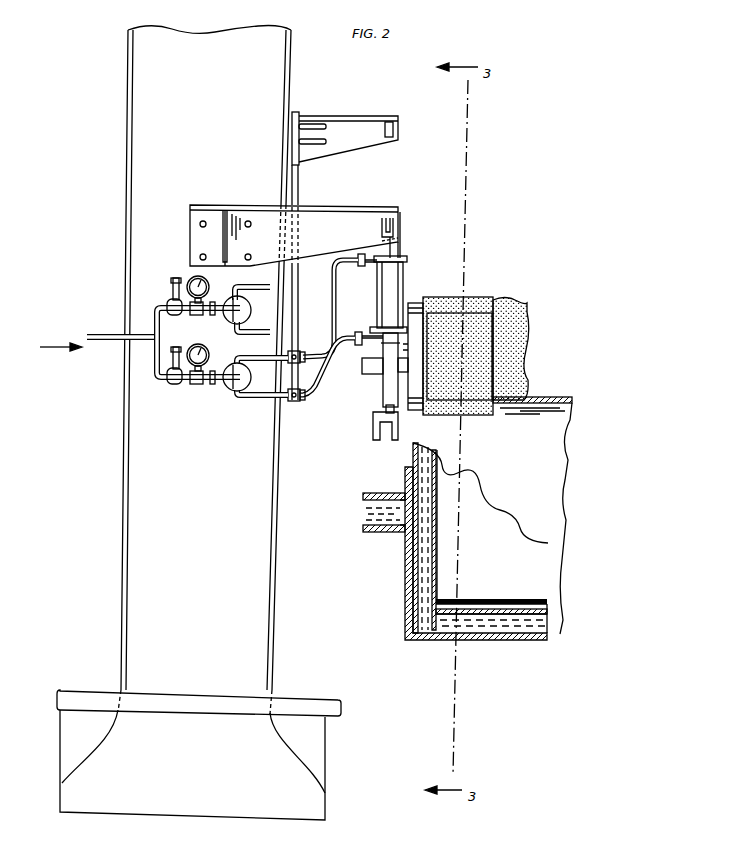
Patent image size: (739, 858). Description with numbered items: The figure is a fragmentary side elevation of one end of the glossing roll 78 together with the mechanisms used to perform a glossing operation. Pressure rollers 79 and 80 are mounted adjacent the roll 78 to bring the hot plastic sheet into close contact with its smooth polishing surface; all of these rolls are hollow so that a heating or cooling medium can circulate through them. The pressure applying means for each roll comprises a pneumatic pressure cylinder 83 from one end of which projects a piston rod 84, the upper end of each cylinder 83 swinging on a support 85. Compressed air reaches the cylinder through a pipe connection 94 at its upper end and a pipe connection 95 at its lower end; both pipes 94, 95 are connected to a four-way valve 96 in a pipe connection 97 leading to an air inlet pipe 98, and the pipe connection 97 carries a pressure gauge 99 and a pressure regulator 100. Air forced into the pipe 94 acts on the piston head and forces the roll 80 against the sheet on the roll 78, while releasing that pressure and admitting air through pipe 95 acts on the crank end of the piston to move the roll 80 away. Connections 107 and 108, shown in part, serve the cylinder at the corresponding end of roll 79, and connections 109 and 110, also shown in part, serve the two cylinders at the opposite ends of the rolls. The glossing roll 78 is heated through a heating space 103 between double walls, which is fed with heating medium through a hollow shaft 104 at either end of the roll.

The glossing roll 78 is at (568, 455).
The pressure roller 79 is at (518, 352).
The pressure roller 80 is at (480, 322).
The pneumatic pressure cylinder 83 is at (398, 302).
The piston rod 84 is at (380, 397).
The support 85 is at (393, 224).
The pipe connection 94 is at (337, 300).
The pipe connection 95 is at (345, 340).
The four-way valve 96 is at (231, 301).
The pipe connection 97 is at (231, 365).
The air inlet pipe 98 is at (103, 342).
The pressure gauge 99 is at (192, 279).
The pressure regulator 100 is at (172, 305).
The heating space 103 is at (521, 630).
The hollow shaft 104 is at (382, 518).
The pipe connection 107 is at (258, 285).
The pipe connection 108 is at (262, 326).
The pipe connection 109 is at (314, 126).
The pipe connection 110 is at (311, 146).